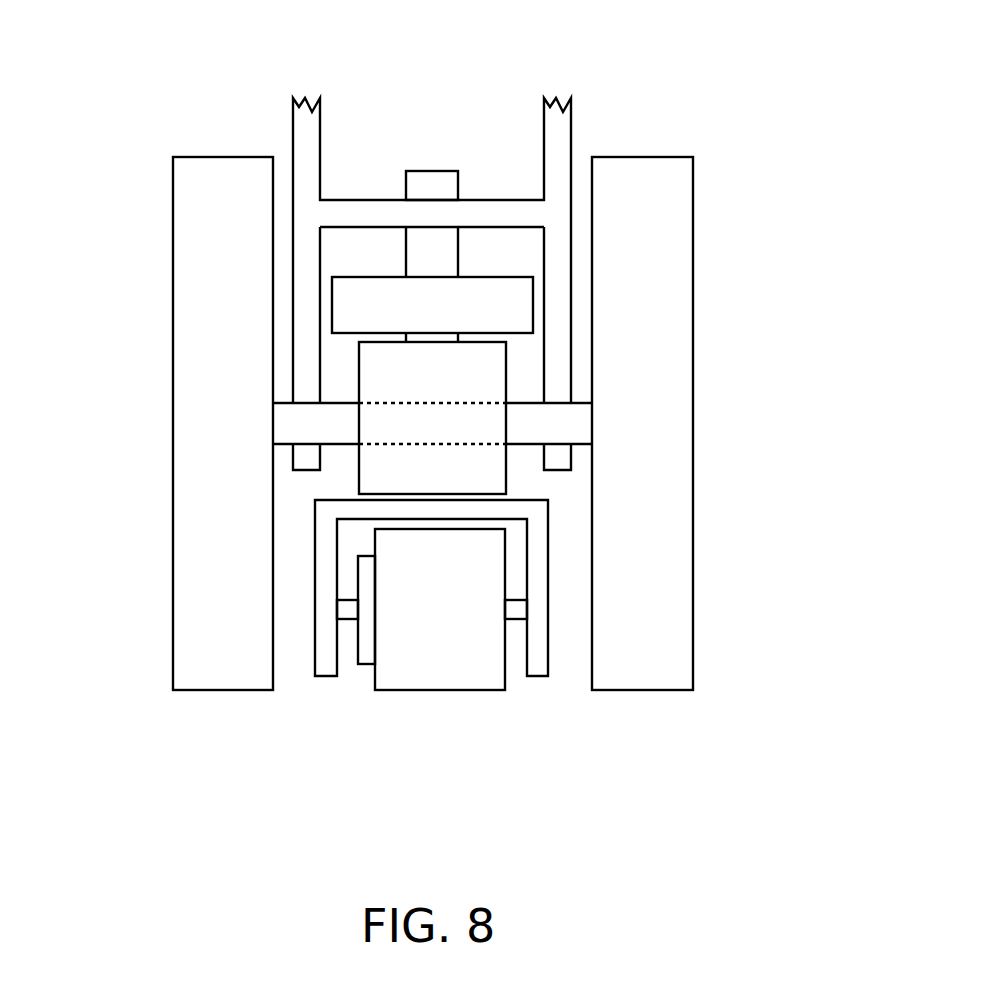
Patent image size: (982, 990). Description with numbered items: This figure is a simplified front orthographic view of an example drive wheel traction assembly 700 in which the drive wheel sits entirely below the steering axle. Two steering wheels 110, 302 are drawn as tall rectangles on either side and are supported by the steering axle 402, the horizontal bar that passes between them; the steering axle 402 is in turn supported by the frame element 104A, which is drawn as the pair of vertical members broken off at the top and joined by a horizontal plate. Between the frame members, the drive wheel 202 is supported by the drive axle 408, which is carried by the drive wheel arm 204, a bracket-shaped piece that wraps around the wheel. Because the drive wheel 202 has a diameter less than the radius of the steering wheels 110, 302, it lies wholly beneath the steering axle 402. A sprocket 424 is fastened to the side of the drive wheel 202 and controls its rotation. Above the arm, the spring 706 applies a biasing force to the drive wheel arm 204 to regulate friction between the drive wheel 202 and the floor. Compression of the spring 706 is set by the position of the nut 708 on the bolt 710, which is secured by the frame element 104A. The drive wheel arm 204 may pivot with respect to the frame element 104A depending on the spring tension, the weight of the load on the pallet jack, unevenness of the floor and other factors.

The drive wheel traction assembly 700 is at (202, 70).
The frame element 104A is at (571, 140).
The bolt 710 is at (458, 252).
The nut 708 is at (533, 308).
The spring 706 is at (506, 385).
The steering axle 402 is at (340, 402).
The steering wheel 302 is at (215, 690).
The steering wheel 110 is at (640, 690).
The drive wheel arm 204 is at (316, 643).
The drive wheel 202 is at (412, 690).
The sprocket 424 is at (368, 664).
The drive axle 408 is at (513, 619).